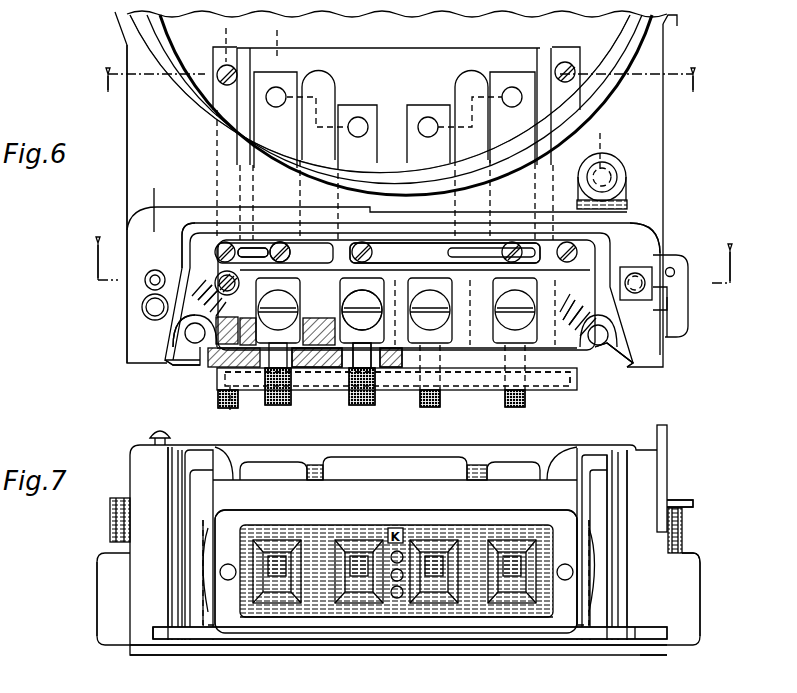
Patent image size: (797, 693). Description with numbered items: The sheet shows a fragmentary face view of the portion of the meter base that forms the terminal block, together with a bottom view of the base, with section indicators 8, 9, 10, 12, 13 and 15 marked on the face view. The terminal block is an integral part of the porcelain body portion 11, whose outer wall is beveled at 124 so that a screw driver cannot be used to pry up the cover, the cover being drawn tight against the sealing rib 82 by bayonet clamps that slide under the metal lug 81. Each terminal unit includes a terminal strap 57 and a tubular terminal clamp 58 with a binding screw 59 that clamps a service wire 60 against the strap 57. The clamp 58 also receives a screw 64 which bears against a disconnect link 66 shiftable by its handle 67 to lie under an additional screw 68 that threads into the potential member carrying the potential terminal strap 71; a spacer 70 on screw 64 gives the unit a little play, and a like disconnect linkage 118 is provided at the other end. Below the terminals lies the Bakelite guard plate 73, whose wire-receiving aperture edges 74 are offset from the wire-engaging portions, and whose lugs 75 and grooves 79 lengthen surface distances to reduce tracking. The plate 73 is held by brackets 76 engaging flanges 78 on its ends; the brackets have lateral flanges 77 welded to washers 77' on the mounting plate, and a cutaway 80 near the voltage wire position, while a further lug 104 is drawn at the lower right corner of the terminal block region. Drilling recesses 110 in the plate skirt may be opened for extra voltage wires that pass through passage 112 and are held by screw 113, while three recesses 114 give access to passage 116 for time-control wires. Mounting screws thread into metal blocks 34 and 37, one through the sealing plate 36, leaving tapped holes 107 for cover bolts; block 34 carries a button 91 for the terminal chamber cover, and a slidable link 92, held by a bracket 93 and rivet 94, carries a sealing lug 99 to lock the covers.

In FIG. 6, the section line 8- 8 is at (415, 263).
In FIG. 6, the section line 9- 9 is at (396, 94).
In FIG. 6, the section line 10- 10 is at (154, 188).
In FIG. 6, the body portion 11 is at (127, 47).
In FIG. 7, the body portion 11 is at (97, 577).
In FIG. 6, the section line 12- 12 is at (226, 30).
In FIG. 6, the section line 13- 13 is at (277, 32).
In FIG. 6, the section line 15- 15 is at (600, 133).
In FIG. 6, the metal block 34 is at (150, 307).
In FIG. 6, the sealing plate 36 is at (681, 272).
In FIG. 7, the sealing plate 36 is at (695, 503).
In FIG. 6, the metal block 37 is at (650, 290).
In FIG. 6, the terminal strap 57 is at (290, 78).
In FIG. 7, the terminal strap 57 is at (518, 585).
In FIG. 6, the tubular terminal clamp 58 is at (292, 370).
In FIG. 6, the binding screw 59 is at (360, 305).
In FIG. 7, the binding screw 59 is at (511, 585).
In FIG. 6, the wire 60 is at (282, 395).
In FIG. 6, the screw 64 is at (282, 248).
In FIG. 7, the screw 64 is at (287, 674).
In FIG. 6, the link 66 is at (255, 248).
In FIG. 7, the link 66 is at (252, 674).
In FIG. 7, the handle 67 is at (396, 652).
In FIG. 6, the screw 68 is at (227, 243).
In FIG. 7, the screw 68 is at (217, 674).
In FIG. 7, the spacer 70 is at (332, 674).
In FIG. 6, the potential terminal strap 71 is at (228, 86).
In FIG. 7, the guard plate 73 is at (382, 615).
In FIG. 6, the edges of the wire-receiving aperture 74 is at (262, 380).
In FIG. 6, the lugs 75 is at (205, 312).
In FIG. 6, the brackets 76 is at (180, 362).
In FIG. 7, the brackets 76 is at (185, 572).
In FIG. 7, the lateral flanges 77 is at (436, 636).
In FIG. 7, the washers 77' is at (416, 653).
In FIG. 6, the flanges 78 is at (200, 356).
In FIG. 7, the flanges 78 is at (152, 648).
In FIG. 6, the grooves 79 is at (352, 372).
In FIG. 7, the cutaway shape 80 is at (205, 550).
In FIG. 7, the lug 81 is at (110, 528).
In FIG. 6, the sealing rib 82 is at (647, 22).
In FIG. 6, the button 91 is at (223, 292).
In FIG. 7, the button 91 is at (150, 434).
In FIG. 6, the link 92 is at (640, 222).
In FIG. 7, the link 92 is at (662, 456).
In FIG. 6, the bracket 93 is at (622, 200).
In FIG. 6, the rivet 94 is at (606, 176).
In FIG. 6, the lug 99 is at (660, 312).
In FIG. 7, the lug 99 is at (668, 428).
In FIG. 6, the lug 104 is at (660, 355).
In FIG. 6, the tapped holes 107 is at (150, 287).
In FIG. 7, the tapped holes 107 is at (418, 674).
In FIG. 6, the drilling recesses 110 is at (566, 386).
In FIG. 7, the drilling recesses 110 is at (221, 575).
In FIG. 6, the passage 112 is at (196, 333).
In FIG. 6, the screw 113 is at (216, 290).
In FIG. 6, the drilling recesses 114 is at (398, 370).
In FIG. 7, the drilling recesses 114 is at (403, 590).
In FIG. 7, the passage 116 is at (395, 674).
In FIG. 6, the disconnect linkage 118 is at (466, 250).
In FIG. 7, the disconnect linkage 118 is at (465, 674).
In FIG. 7, the bevel 124 is at (695, 556).